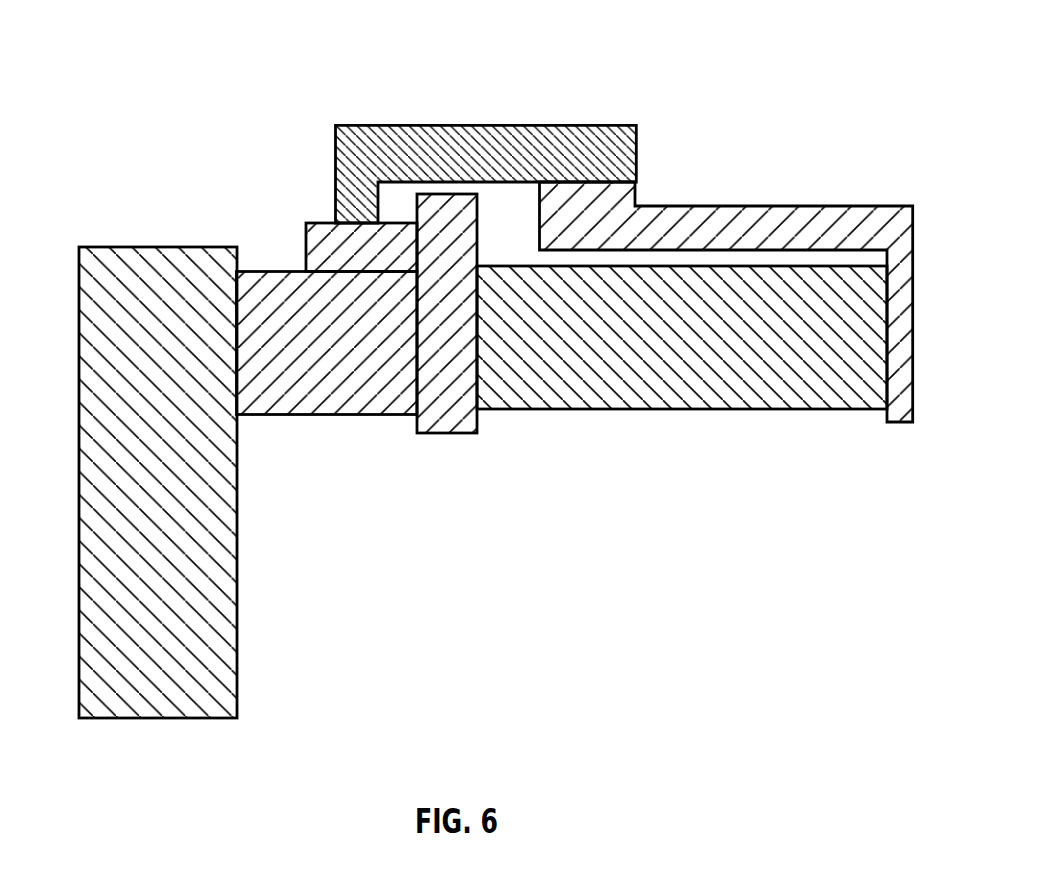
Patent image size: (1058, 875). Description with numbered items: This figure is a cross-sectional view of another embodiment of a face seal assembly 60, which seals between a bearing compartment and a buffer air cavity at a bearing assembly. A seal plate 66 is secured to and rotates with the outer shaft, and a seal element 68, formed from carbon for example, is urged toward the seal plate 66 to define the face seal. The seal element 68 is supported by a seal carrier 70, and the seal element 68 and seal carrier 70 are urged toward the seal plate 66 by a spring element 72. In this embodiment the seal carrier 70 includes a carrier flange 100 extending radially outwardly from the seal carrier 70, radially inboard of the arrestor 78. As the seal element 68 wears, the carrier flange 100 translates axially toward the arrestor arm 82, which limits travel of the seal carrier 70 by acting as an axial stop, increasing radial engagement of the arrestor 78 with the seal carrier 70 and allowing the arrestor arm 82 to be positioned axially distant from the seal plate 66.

The face seal assembly 60 is at (702, 40).
The seal plate 66 is at (106, 417).
The seal element 68 is at (343, 405).
The seal carrier 70 is at (442, 417).
The spring element 72 is at (625, 397).
The arrestor 78 is at (360, 142).
The arrestor arm 82 is at (352, 153).
The carrier flange 100 is at (448, 210).